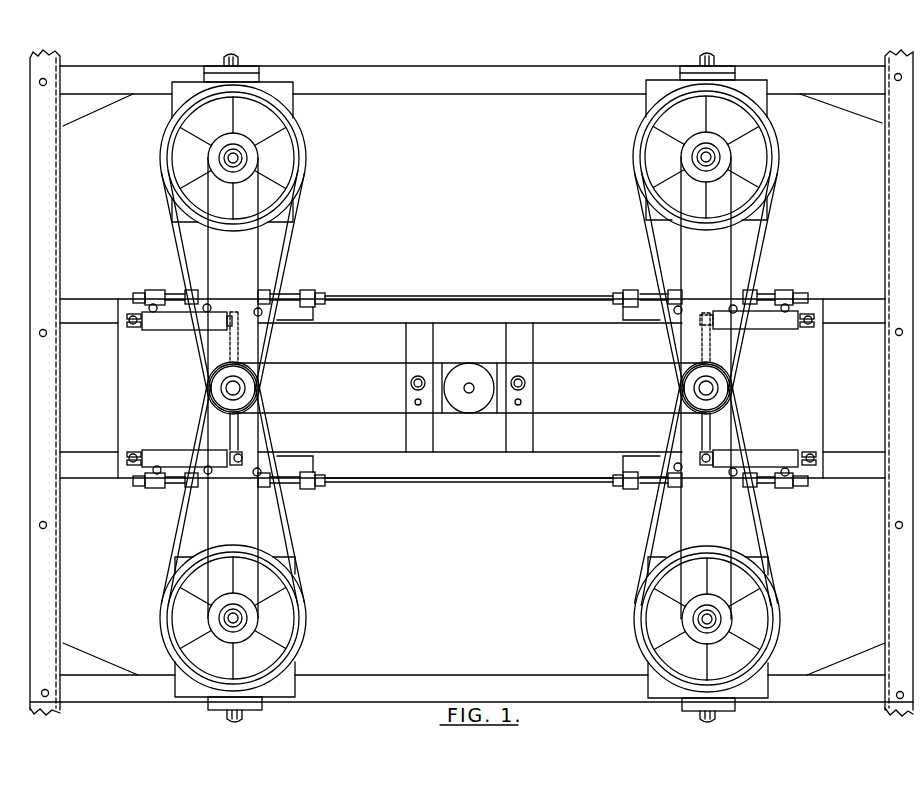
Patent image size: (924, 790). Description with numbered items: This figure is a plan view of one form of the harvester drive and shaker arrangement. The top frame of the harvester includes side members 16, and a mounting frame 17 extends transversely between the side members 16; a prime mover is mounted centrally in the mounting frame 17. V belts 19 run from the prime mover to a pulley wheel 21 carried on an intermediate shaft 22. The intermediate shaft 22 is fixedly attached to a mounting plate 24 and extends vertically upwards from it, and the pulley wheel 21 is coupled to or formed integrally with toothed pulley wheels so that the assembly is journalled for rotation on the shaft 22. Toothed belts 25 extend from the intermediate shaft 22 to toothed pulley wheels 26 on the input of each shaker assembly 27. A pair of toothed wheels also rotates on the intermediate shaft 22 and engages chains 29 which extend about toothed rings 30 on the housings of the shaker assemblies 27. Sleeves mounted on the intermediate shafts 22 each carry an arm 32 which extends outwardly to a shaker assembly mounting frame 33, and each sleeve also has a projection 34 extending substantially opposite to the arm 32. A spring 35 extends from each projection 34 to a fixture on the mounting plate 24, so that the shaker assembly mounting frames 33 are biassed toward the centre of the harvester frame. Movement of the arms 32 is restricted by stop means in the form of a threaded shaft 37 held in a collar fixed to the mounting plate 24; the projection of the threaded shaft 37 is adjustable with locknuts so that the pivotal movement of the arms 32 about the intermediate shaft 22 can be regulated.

The side members 16 is at (50, 623).
The mounting frame 17 is at (576, 288).
The V belts 19 is at (336, 366).
The pulley wheel 21 is at (478, 378).
The intermediate shaft 22 is at (728, 387).
The mounting plate 24 is at (470, 388).
The toothed belts 25 is at (735, 248).
The toothed pulley wheels 26 is at (690, 166).
The shaker assembly 27 is at (295, 155).
The chains 29 is at (736, 341).
The toothed rings 30 is at (278, 567).
The arm 32 is at (246, 533).
The shaker assembly mounting frame 33 is at (293, 110).
The projection 34 is at (237, 347).
The spring 35 is at (178, 326).
The threaded shaft 37 is at (647, 290).